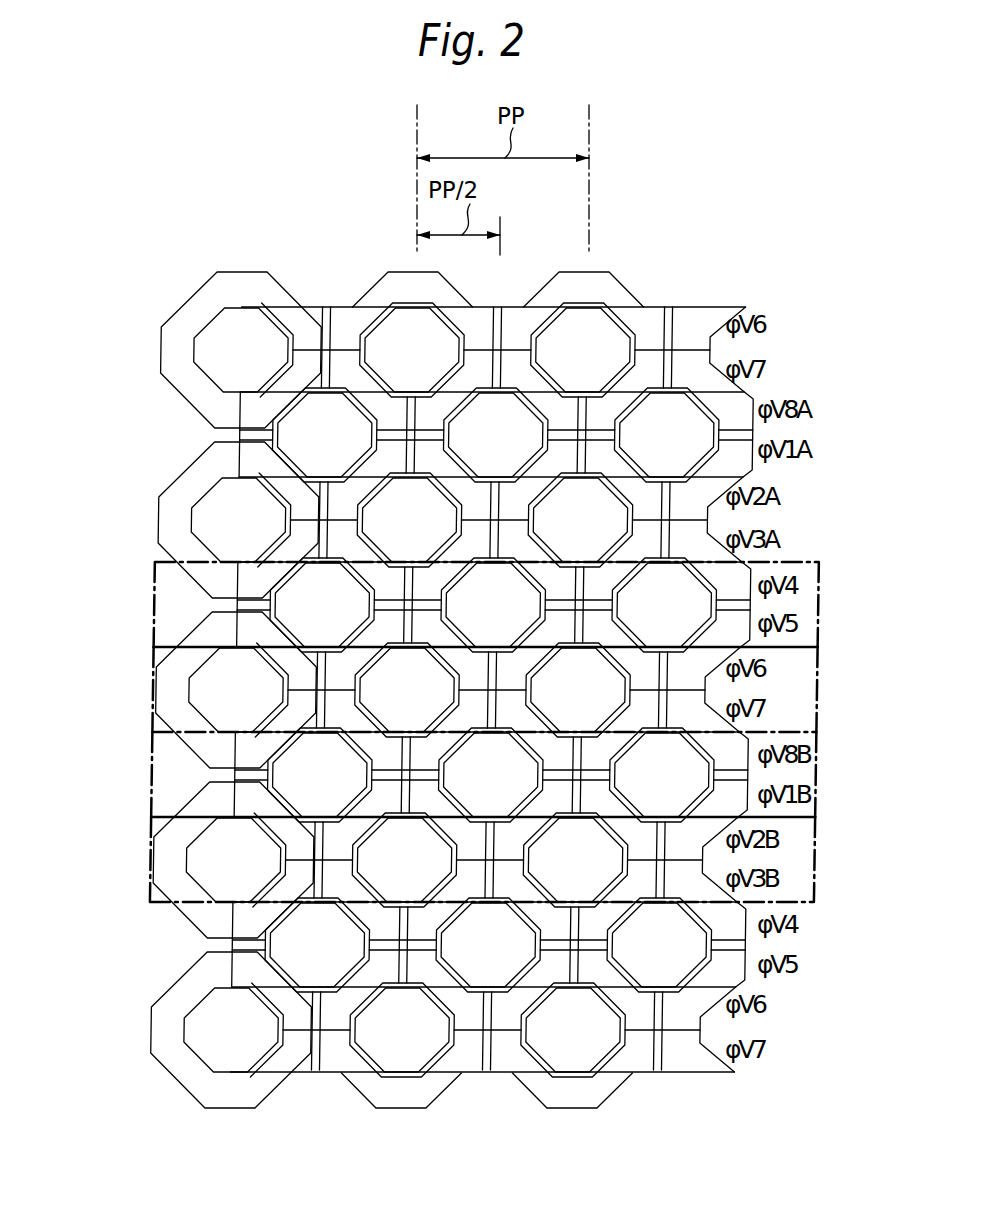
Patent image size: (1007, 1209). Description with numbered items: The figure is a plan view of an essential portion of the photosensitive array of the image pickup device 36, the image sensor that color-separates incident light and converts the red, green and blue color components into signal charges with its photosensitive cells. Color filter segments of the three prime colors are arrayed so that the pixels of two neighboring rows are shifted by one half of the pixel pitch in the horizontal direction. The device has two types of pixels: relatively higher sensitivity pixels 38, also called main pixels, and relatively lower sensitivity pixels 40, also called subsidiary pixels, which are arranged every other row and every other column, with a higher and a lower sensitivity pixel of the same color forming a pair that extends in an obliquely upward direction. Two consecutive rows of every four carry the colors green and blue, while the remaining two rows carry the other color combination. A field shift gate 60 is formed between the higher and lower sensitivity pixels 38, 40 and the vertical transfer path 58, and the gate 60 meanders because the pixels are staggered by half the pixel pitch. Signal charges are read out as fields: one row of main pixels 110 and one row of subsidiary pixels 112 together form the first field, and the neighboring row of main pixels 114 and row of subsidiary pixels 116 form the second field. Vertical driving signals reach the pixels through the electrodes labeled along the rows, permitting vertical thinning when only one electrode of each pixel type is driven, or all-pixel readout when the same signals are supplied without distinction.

The image pickup device 36 is at (765, 243).
The higher sensitivity pixels 38 is at (461, 695).
The lower sensitivity pixels 40 is at (468, 690).
The vertical transfer path 58 is at (529, 699).
The field shift gate 60 is at (458, 699).
The row of main pixels of the first field 110 is at (150, 860).
The row of subsidiary pixels of the first field 112 is at (150, 772).
The row of main pixels of the second field 114 is at (150, 688).
The row of subsidiary pixels of the second field 116 is at (150, 605).